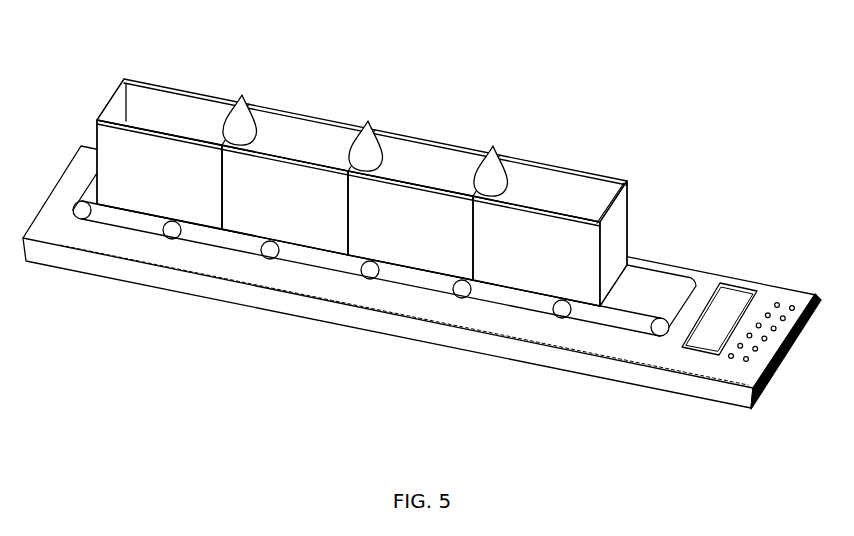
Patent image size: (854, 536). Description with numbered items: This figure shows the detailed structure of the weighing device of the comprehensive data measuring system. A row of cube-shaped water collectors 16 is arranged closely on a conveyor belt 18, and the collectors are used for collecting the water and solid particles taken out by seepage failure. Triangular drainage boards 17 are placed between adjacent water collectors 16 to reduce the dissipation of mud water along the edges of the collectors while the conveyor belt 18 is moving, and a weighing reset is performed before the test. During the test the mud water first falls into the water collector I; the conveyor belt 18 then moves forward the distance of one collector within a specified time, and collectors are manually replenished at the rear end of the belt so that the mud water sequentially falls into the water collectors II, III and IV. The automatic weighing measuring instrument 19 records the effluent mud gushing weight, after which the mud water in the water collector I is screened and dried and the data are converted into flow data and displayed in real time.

The water collector I is at (547, 190).
The water collector II is at (422, 162).
The water collector III is at (290, 133).
The water collector IV is at (175, 120).
The water collector 16 is at (277, 193).
The triangular drainage board 17 is at (368, 147).
The conveyor belt 18 is at (642, 283).
The automatic weighing measuring instrument 19 is at (763, 345).